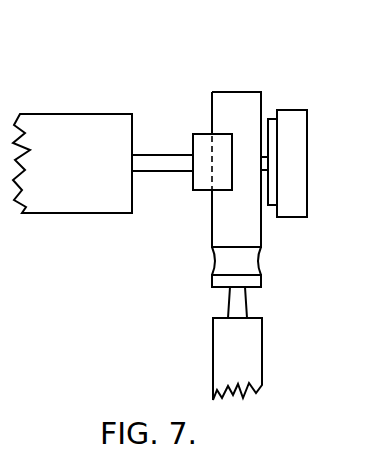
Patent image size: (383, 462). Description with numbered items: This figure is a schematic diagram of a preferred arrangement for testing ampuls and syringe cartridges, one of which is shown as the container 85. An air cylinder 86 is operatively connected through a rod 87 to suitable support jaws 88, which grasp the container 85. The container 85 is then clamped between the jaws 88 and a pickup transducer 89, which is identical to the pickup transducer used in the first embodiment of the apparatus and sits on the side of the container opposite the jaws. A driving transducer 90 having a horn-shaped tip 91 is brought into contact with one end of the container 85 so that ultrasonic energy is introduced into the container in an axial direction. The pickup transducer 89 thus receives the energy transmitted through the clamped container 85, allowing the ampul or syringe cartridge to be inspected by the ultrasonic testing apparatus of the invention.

The container 85 is at (238, 109).
The air cylinder 86 is at (57, 135).
The rod 87 is at (155, 162).
The support jaws 88 is at (201, 140).
The pickup transducer 89 is at (295, 137).
The driving transducer 90 is at (245, 345).
The horn-shaped tip 91 is at (238, 303).